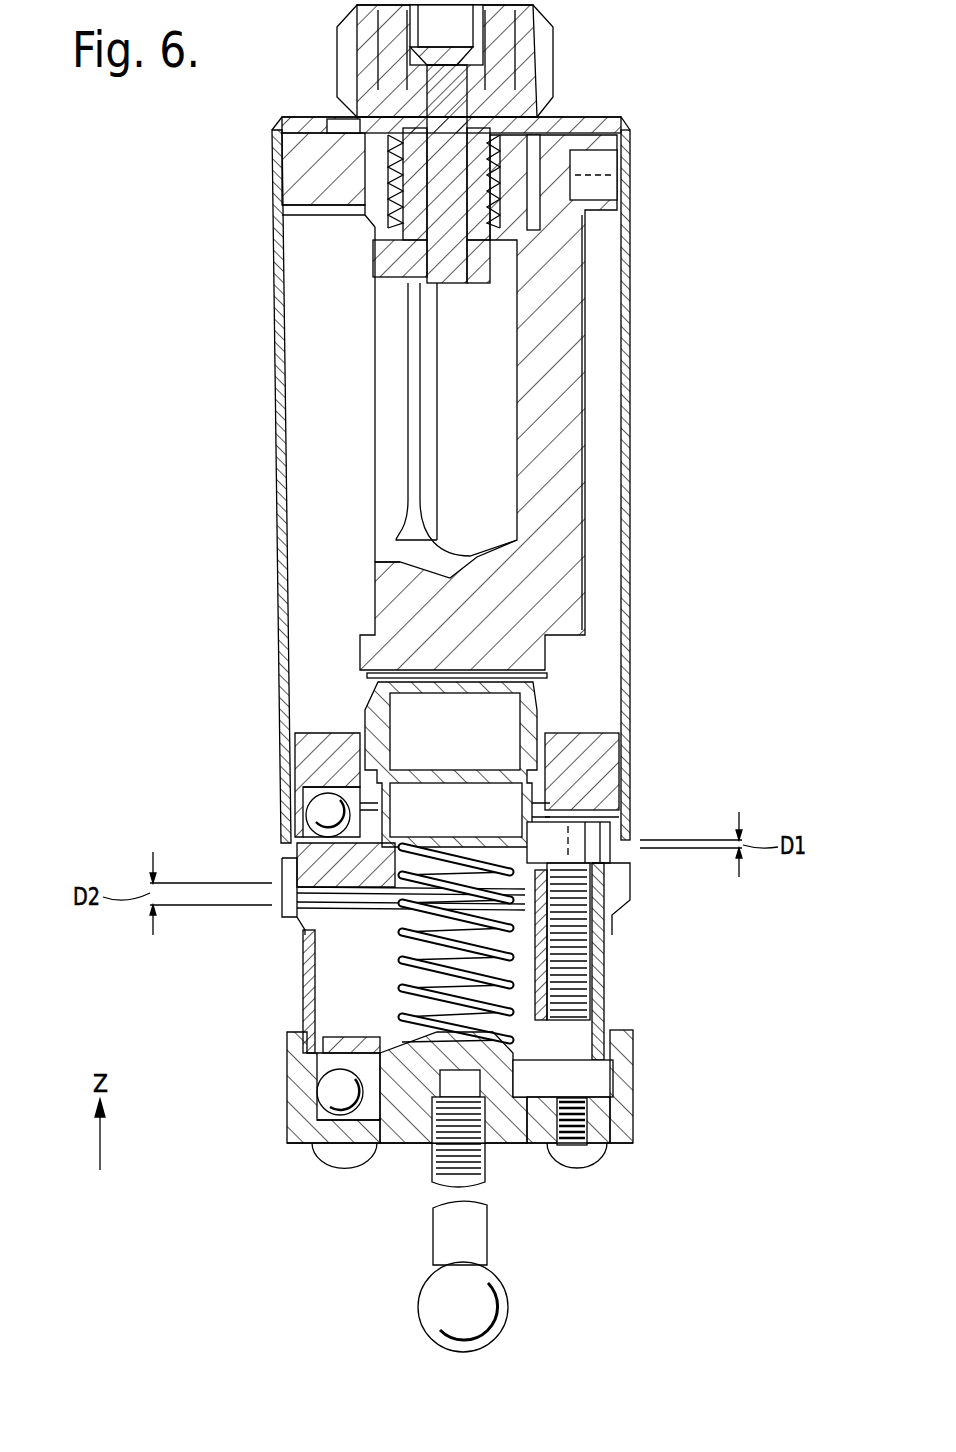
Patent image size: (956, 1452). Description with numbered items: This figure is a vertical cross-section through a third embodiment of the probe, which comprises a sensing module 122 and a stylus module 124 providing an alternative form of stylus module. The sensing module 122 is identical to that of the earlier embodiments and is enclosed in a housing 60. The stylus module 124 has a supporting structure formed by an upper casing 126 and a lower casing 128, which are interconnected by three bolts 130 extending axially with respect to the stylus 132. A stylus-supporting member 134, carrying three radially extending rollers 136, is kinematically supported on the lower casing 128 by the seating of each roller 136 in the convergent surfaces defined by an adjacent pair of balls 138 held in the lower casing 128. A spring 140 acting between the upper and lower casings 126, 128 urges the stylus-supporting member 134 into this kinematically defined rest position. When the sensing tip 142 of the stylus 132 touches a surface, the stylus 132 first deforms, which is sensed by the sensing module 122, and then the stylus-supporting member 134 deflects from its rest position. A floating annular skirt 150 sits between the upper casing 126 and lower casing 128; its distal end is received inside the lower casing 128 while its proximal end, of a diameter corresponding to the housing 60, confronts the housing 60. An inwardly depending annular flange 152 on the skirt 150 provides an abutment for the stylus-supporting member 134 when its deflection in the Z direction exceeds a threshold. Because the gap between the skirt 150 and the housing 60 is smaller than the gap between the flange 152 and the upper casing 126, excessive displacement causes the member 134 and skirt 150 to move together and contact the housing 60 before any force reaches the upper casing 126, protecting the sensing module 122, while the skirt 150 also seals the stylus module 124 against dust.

The housing 60 is at (275, 518).
The sensing module 122 is at (815, 843).
The stylus module 124 is at (815, 843).
The upper casing 126 is at (283, 846).
The lower casing 128 is at (630, 1127).
The bolts 130 is at (612, 945).
The stylus 132 is at (475, 1242).
The stylus-supporting member 134 is at (415, 1165).
The rollers 136 is at (312, 1076).
The balls 138 is at (320, 1112).
The spring 140 is at (402, 990).
The sensing tip 142 is at (430, 1298).
The floating annular skirt 150 is at (297, 925).
The annular flange 152 is at (326, 928).